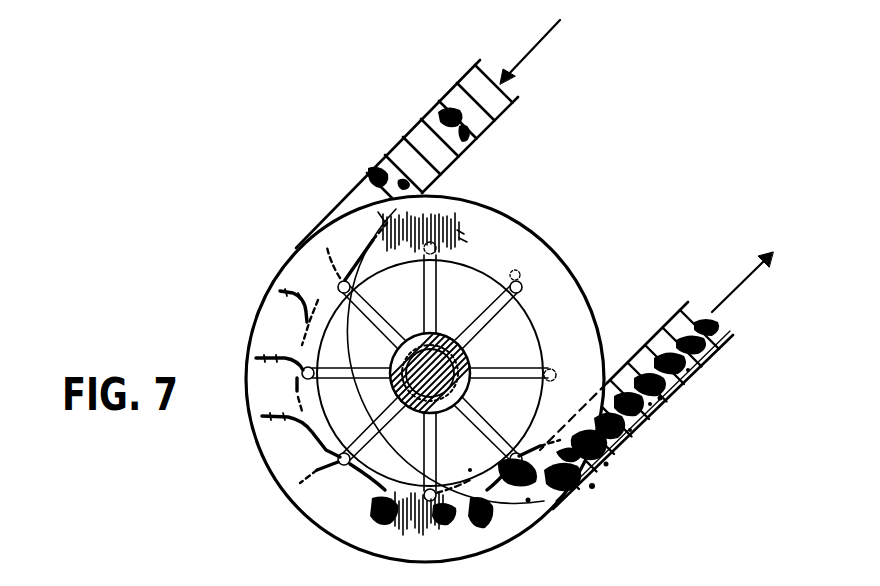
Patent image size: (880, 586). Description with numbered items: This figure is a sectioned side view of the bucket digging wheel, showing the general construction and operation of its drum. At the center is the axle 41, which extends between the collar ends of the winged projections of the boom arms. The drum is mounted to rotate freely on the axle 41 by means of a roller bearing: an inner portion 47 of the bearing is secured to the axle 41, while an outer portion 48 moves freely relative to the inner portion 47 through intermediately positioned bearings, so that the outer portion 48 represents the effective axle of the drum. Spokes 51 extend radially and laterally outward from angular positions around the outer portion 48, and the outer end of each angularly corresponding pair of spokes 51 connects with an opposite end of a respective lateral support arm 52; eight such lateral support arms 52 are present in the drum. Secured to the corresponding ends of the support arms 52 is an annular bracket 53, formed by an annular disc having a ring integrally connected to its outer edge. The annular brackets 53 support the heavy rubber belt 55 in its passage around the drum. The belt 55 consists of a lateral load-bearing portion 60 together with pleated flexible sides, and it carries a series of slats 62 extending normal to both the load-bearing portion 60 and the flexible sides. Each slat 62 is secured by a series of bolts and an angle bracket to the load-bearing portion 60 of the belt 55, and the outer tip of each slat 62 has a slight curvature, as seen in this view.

The axle 41 is at (447, 420).
The inner portion of roller bearing 47 is at (470, 395).
The outer portion of roller bearing 48 is at (378, 428).
The spokes 51 is at (436, 306).
The lateral support arm 52 is at (522, 284).
The annular bracket 53 is at (507, 243).
The heavy rubber belt 55 is at (420, 153).
The lateral load-bearing portion 60 is at (418, 121).
The slats 62 is at (468, 111).